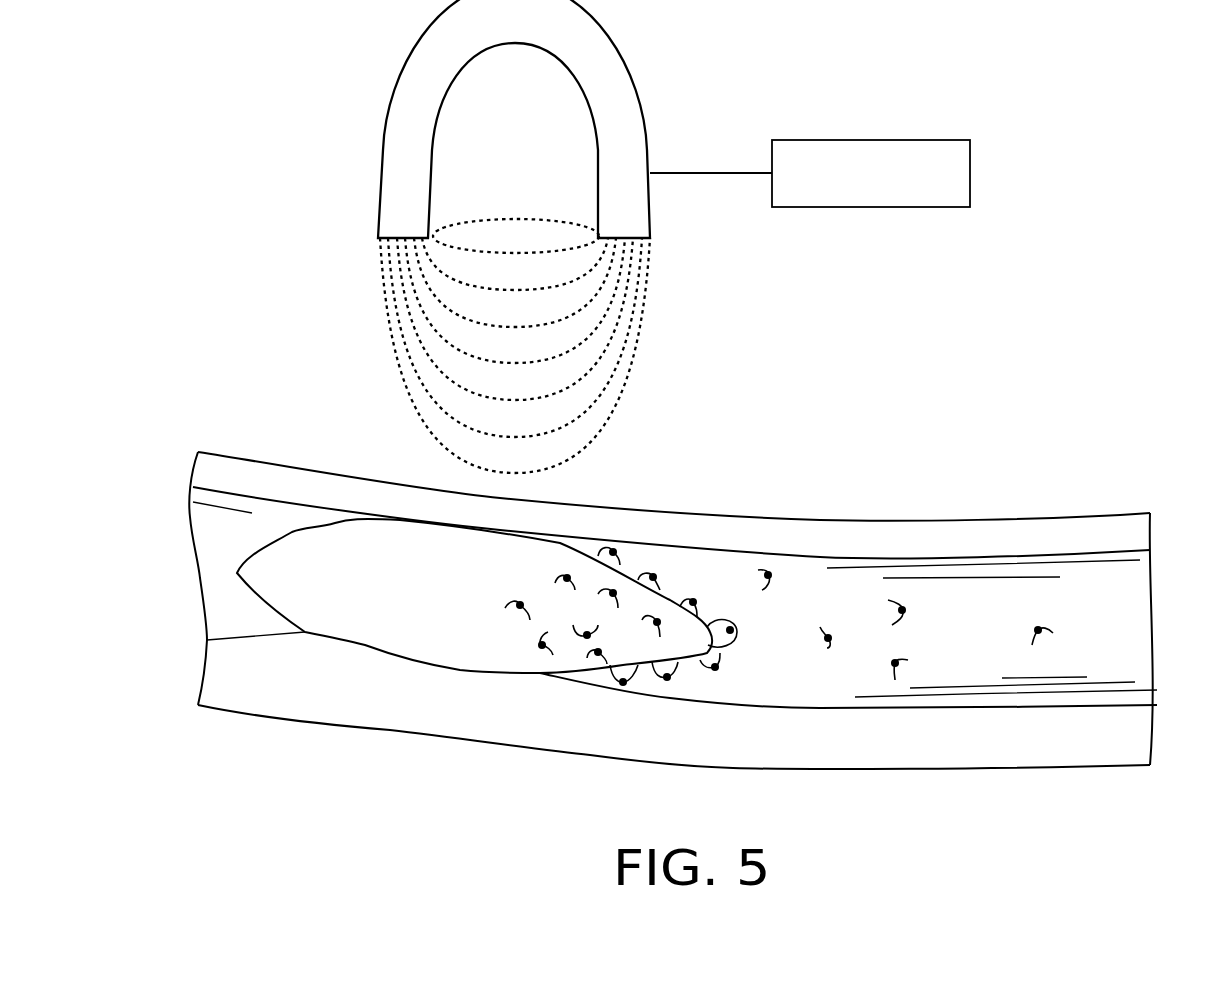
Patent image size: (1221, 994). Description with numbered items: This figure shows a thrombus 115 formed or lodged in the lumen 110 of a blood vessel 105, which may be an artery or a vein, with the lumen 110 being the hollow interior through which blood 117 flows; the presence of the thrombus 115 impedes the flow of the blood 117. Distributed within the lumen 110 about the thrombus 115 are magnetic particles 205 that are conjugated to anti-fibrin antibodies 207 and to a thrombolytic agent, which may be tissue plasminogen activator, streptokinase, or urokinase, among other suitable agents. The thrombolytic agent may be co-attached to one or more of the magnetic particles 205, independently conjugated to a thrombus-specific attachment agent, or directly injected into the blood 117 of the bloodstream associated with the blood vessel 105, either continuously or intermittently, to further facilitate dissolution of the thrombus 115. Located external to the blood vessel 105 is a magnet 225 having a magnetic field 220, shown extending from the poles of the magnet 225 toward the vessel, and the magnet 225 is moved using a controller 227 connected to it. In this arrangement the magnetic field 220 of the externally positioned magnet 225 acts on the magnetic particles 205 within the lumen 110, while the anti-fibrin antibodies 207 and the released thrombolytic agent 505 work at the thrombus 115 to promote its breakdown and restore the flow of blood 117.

The blood vessel 105 is at (772, 518).
The lumen 110 is at (997, 593).
The thrombus 115 is at (450, 607).
The blood 117 is at (1118, 626).
The magnetic particles 205 is at (657, 622).
The anti-fibrin antibodies 207 is at (827, 648).
The magnetic field 220 is at (390, 343).
The magnet 225 is at (402, 77).
The controller 227 is at (870, 140).
The released thrombolytic agents 505 is at (777, 700).